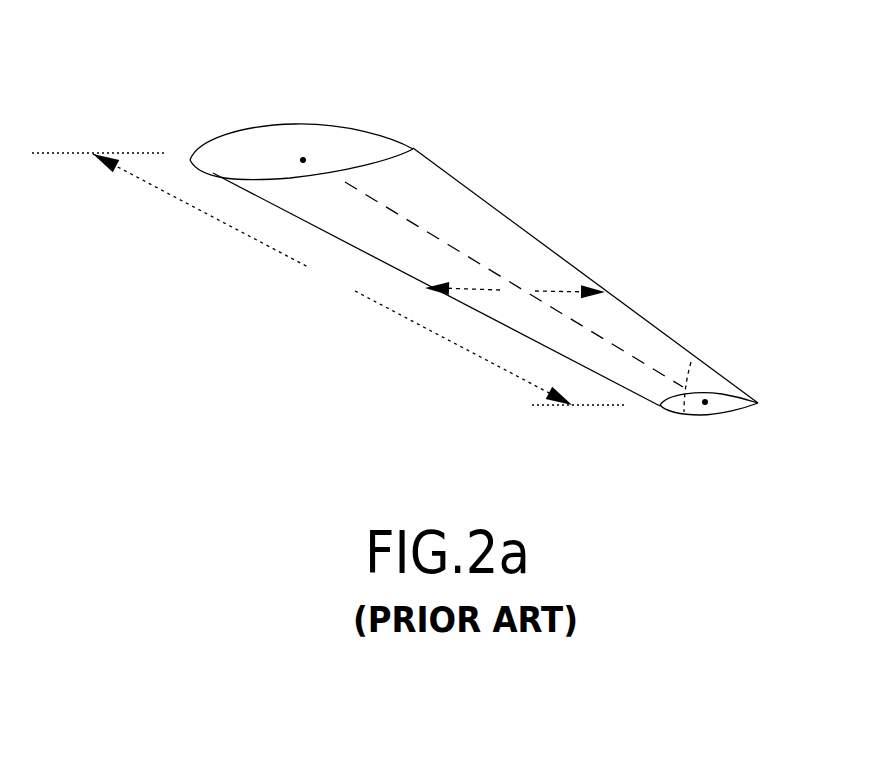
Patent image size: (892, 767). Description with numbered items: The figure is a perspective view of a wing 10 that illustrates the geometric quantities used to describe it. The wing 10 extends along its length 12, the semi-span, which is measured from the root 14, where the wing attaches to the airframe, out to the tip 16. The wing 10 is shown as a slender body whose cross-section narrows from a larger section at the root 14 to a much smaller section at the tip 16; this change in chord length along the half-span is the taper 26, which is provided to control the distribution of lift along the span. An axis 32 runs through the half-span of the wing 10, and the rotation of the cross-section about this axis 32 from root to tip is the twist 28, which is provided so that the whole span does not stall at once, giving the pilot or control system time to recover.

The wing 10 is at (214, 308).
The length 12 is at (329, 279).
The root 14 is at (274, 115).
The tip 16 is at (688, 434).
The taper 26 is at (515, 292).
The twist 28 is at (694, 372).
The axis 32 is at (722, 432).